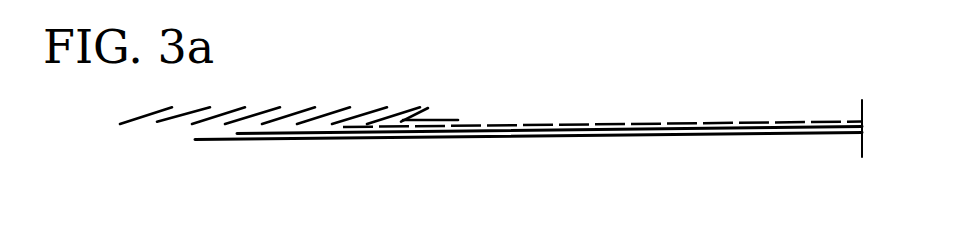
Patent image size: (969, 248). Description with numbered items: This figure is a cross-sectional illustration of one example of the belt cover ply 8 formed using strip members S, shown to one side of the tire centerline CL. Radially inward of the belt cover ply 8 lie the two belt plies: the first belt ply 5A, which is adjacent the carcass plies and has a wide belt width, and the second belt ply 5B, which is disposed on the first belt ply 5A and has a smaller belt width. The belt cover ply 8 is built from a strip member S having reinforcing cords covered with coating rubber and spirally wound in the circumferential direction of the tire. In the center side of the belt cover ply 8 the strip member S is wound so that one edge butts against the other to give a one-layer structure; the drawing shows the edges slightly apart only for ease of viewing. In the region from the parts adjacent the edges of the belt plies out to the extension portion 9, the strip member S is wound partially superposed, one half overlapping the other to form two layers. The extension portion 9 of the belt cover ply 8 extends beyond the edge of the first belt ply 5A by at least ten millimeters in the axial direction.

The extension portion 9 is at (173, 118).
The belt cover ply 8 is at (446, 116).
The strip member S is at (613, 125).
The first belt ply 5A is at (693, 137).
The second belt ply 5B is at (753, 137).
The tire centerline CL is at (858, 112).